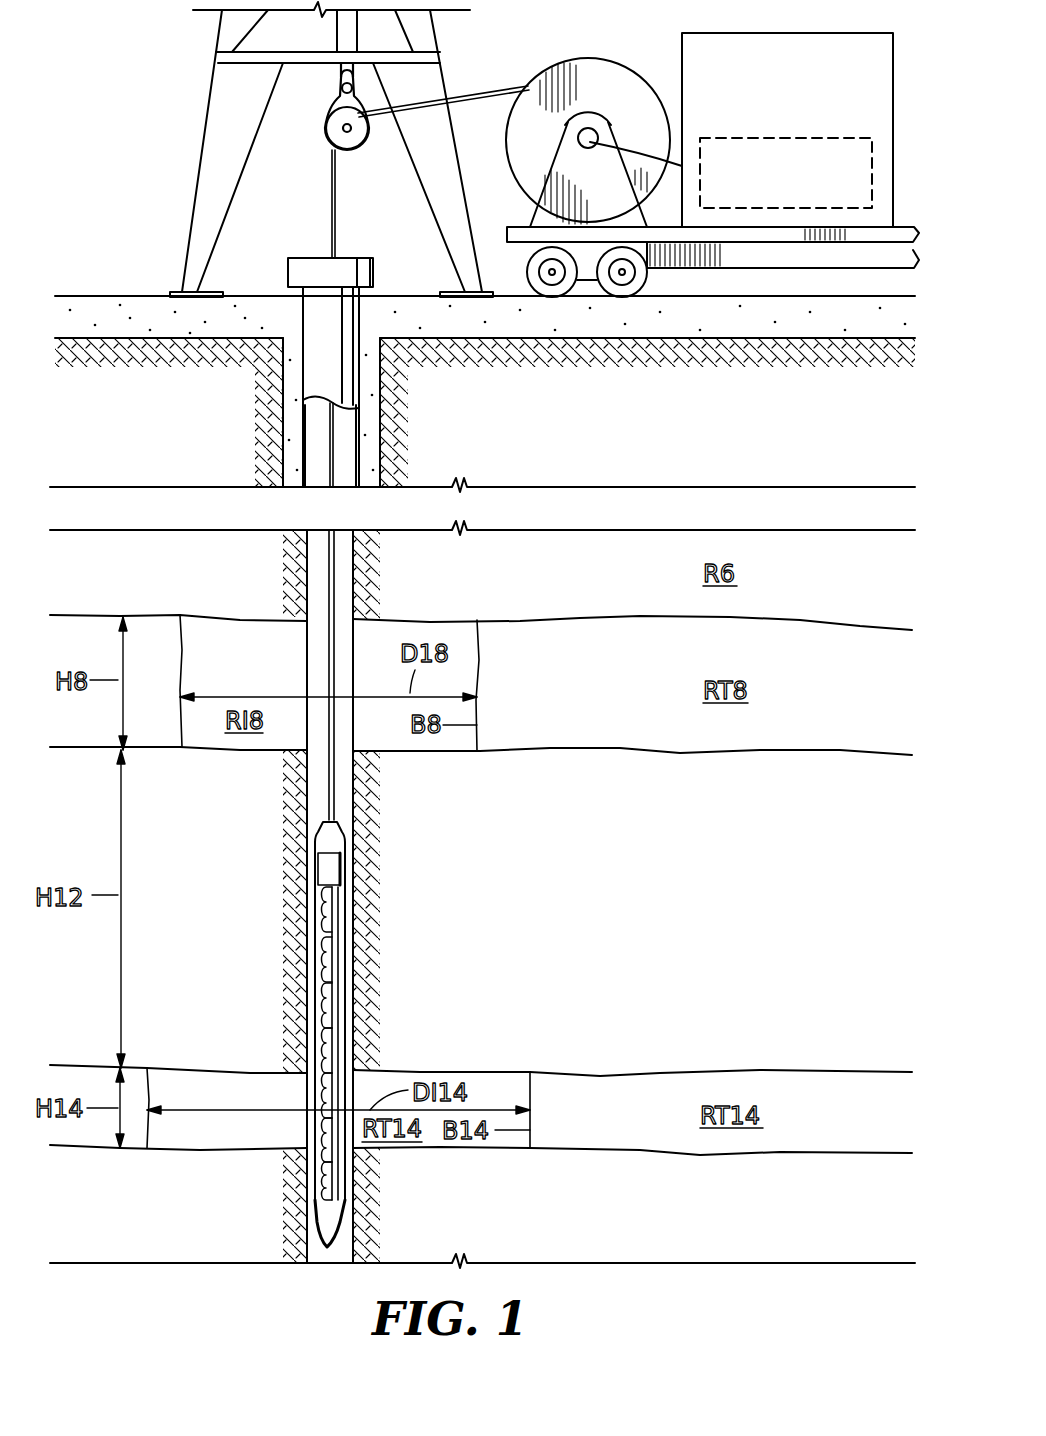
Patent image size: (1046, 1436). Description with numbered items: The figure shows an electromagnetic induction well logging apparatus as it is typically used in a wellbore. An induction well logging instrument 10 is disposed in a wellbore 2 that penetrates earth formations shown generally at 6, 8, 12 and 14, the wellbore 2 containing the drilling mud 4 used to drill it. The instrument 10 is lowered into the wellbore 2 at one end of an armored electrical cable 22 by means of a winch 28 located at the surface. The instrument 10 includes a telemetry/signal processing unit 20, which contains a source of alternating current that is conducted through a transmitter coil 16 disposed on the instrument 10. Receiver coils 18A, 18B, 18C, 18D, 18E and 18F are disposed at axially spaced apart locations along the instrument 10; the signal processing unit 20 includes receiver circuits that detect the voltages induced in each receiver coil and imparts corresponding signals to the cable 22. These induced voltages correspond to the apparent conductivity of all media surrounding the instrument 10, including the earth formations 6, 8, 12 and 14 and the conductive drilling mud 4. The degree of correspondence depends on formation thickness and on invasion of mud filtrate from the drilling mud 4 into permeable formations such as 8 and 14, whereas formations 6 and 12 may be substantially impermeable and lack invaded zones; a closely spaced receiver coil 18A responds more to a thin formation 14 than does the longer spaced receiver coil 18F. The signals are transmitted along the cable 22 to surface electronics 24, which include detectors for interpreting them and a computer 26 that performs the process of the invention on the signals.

The wellbore 2 is at (320, 590).
The drilling mud 4 is at (320, 663).
The earth formation 6 is at (520, 588).
The earth formation 8 is at (587, 633).
The induction well logging instrument 10 is at (300, 872).
The earth formation 12 is at (522, 911).
The earth formation 14 is at (593, 1085).
The transmitter coil 16 is at (323, 907).
The receiver coil 18A is at (323, 951).
The receiver coil 18B is at (323, 996).
The receiver coil 18C is at (323, 1041).
The receiver coil 18D is at (322, 1089).
The receiver coil 18E is at (322, 1132).
The receiver coil 18F is at (322, 1177).
The telemetry/signal processing unit 20 is at (323, 858).
The armored electrical cable 22 is at (328, 560).
The surface electronics 24 is at (820, 32).
The computer 26 is at (798, 138).
The winch 28 is at (588, 58).